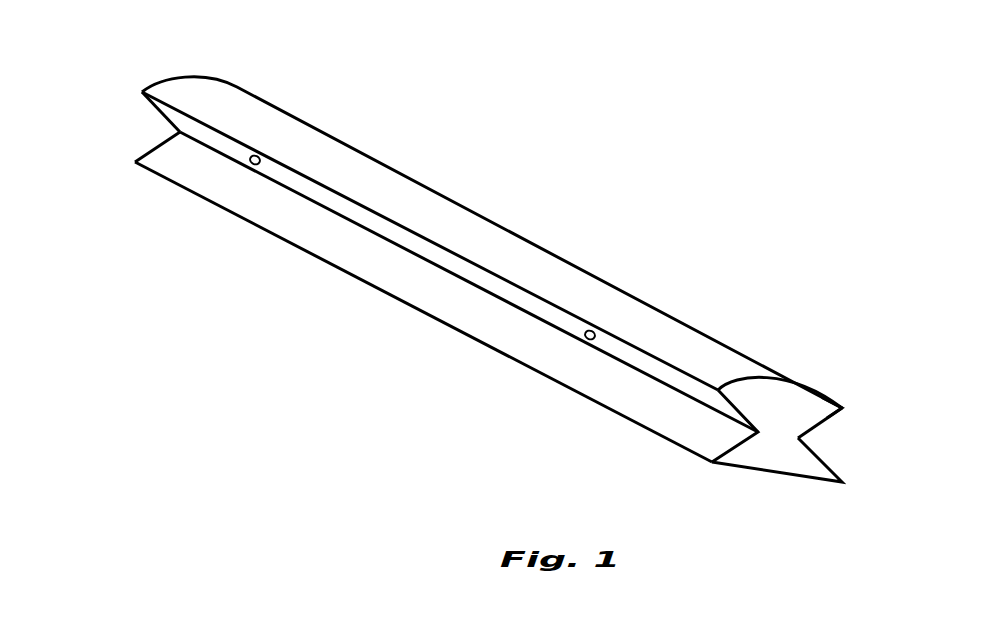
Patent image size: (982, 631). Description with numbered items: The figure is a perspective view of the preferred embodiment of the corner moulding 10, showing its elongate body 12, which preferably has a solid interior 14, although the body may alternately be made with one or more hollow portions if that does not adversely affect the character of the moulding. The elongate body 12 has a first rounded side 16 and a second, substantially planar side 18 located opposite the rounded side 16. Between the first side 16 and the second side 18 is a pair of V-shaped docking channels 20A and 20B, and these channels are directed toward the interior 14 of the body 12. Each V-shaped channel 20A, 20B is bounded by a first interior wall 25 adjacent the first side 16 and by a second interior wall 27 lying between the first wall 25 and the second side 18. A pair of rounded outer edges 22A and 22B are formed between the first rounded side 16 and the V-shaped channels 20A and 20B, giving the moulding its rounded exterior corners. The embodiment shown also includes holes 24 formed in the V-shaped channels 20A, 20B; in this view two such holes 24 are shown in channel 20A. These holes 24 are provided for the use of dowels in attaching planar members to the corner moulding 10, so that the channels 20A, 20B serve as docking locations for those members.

The corner moulding 10 is at (312, 96).
The elongate body 12 is at (441, 194).
The solid interior 14 is at (783, 421).
The first rounded side 16 is at (748, 377).
The second substantially planar side 18 is at (785, 473).
The V-shaped docking channel 20A is at (148, 152).
The V-shaped docking channel 20B is at (819, 424).
The rounded outer edge 22A is at (142, 92).
The rounded outer edge 22B is at (843, 408).
The holes 24 is at (250, 163).
The first interior wall 25 is at (317, 192).
The second interior wall 27 is at (357, 252).